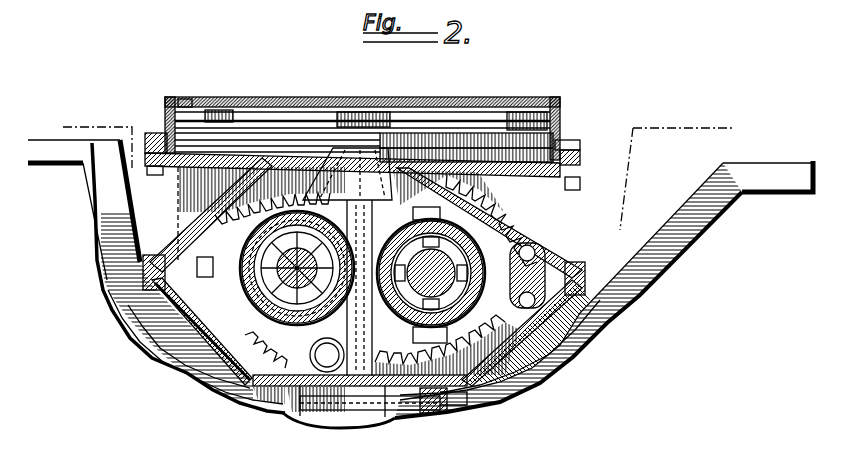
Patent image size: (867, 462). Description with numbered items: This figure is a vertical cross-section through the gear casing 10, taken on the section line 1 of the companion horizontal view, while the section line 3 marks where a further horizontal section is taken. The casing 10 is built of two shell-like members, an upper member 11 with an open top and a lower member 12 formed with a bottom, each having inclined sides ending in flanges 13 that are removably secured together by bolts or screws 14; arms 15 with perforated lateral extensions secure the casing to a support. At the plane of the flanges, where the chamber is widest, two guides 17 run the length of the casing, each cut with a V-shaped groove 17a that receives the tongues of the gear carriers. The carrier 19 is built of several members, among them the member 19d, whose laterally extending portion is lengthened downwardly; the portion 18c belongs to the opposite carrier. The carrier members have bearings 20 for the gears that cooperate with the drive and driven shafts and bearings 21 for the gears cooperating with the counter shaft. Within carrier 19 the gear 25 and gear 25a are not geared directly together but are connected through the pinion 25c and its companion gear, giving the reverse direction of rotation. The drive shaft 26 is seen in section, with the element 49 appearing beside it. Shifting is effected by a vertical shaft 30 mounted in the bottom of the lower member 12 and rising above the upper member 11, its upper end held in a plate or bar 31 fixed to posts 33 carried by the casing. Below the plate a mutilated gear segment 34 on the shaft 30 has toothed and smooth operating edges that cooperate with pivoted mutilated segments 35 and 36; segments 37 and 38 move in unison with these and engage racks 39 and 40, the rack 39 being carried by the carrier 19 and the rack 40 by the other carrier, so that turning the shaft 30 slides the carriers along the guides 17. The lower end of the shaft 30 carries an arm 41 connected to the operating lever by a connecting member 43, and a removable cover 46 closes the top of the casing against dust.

The section line 1 is at (399, 175).
The section line 3 is at (165, 100).
The gear casing 10 is at (167, 363).
The upper casing member 11 is at (215, 203).
The lower casing member 12 is at (553, 377).
The flanges 13 is at (127, 297).
The bolts or screws 14 is at (152, 243).
The arms 15 is at (103, 217).
The guides 17 is at (128, 330).
The V-shaped groove 17a is at (153, 337).
The lever link 18c is at (550, 243).
The gear carrier 19 is at (213, 370).
The carrier member 19d is at (277, 403).
The bearings 20 is at (527, 397).
The bearings 21 is at (243, 397).
The gear 25 is at (400, 403).
The gear 25a is at (213, 397).
The pinion 25c is at (313, 423).
The drive shaft 26 is at (431, 273).
The vertically-extending shaft 30 is at (370, 410).
The plate or bar 31 is at (257, 127).
The posts 33 is at (165, 148).
The mutilated gear segment 34 is at (423, 137).
The mutilated segment 35 is at (488, 140).
The mutilated segment 36 is at (213, 137).
The segment 37 is at (580, 141).
The segment 38 is at (290, 137).
The rack 39 is at (396, 148).
The rack 40 is at (323, 135).
The arm 41 is at (425, 413).
The connecting member 43 is at (432, 412).
The removable cover 46 is at (186, 97).
The roller wheel 49 is at (343, 275).